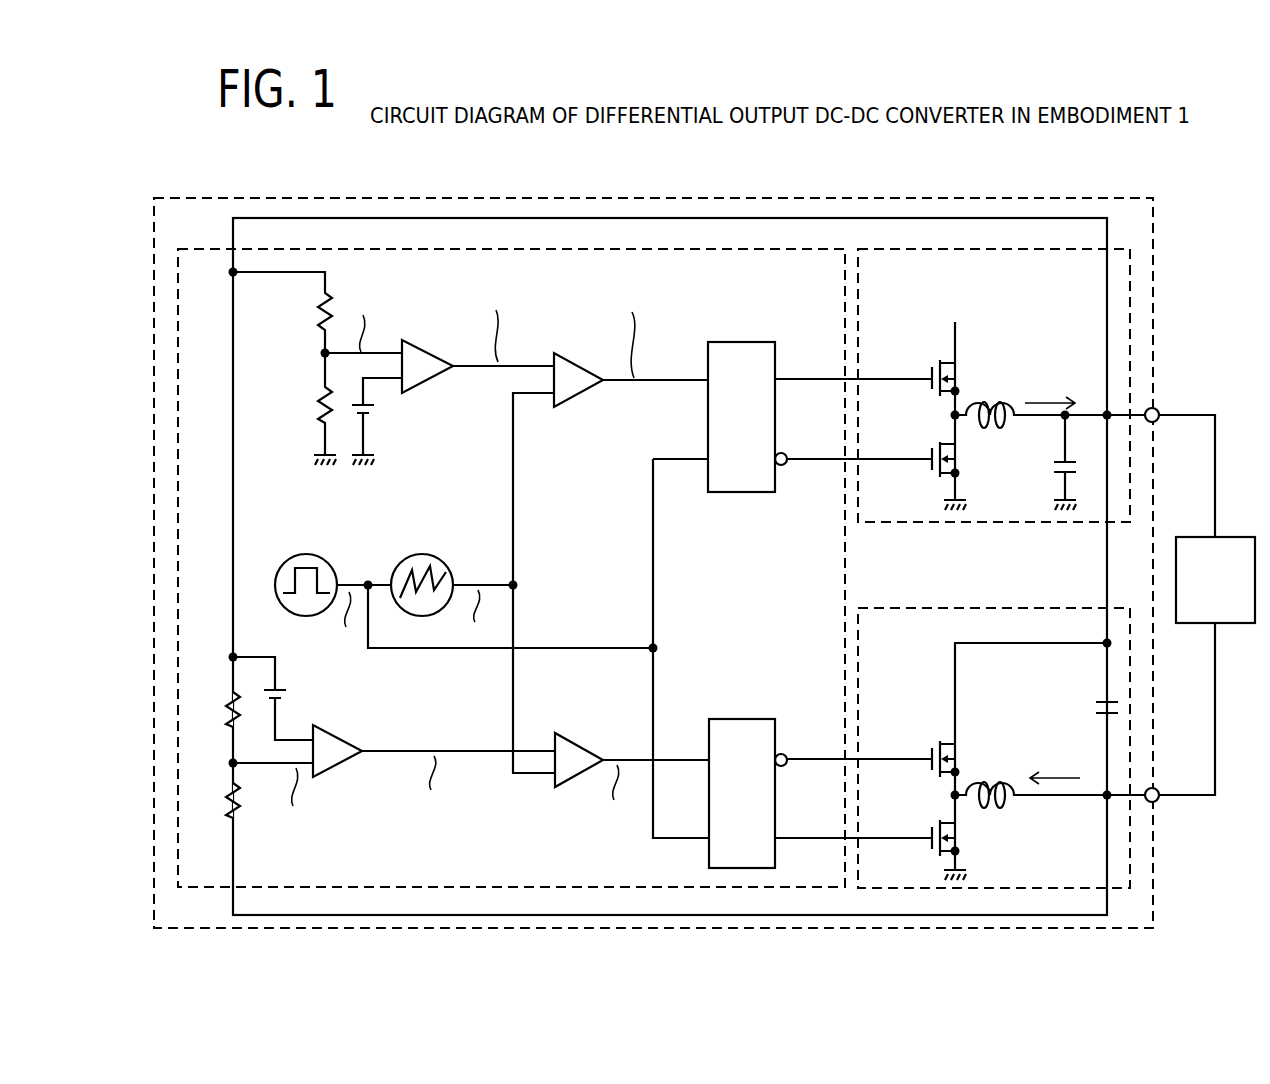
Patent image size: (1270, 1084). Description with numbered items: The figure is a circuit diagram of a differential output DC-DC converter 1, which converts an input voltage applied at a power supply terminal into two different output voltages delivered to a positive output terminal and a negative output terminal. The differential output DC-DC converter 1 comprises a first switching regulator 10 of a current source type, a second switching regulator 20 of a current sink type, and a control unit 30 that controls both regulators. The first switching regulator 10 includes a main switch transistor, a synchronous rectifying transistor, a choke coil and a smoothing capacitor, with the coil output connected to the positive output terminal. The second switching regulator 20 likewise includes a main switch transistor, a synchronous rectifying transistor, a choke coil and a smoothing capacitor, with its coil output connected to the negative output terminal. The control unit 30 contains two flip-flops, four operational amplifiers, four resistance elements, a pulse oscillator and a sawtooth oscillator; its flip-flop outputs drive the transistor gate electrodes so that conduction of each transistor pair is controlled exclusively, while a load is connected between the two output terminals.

The differential output DC-DC converter 1 is at (795, 199).
The first switching regulator 10 is at (991, 249).
The second switching regulator 20 is at (1130, 858).
The control unit 30 is at (612, 249).